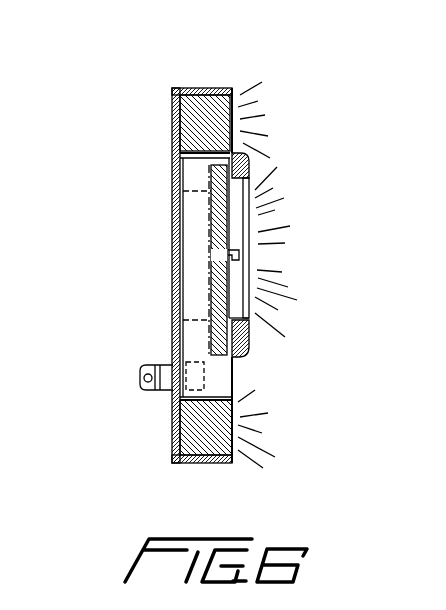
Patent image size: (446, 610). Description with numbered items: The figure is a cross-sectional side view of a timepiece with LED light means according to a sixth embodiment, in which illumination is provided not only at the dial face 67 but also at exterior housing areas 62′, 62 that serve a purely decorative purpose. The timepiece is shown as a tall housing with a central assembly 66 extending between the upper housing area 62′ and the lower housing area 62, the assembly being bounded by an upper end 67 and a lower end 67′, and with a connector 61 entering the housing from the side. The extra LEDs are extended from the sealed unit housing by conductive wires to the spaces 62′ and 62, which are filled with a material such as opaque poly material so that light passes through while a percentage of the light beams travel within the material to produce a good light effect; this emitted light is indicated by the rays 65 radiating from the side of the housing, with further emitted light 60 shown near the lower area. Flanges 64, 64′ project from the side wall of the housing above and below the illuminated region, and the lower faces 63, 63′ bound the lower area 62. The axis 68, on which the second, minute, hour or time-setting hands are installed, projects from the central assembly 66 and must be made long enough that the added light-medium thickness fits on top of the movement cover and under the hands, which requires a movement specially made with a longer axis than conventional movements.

The light source unit 60 is at (236, 405).
The connector cable 61 is at (140, 375).
The exterior housing area 62 is at (190, 430).
The exterior housing area 62′ is at (186, 121).
The lower end face 63 is at (236, 358).
The lower edge 63′ is at (237, 447).
The upper flange 64 is at (247, 152).
The lower flange 64′ is at (247, 347).
The emitted light 65 is at (250, 222).
The lamp tube 66 is at (192, 213).
The dial face 67 is at (196, 178).
The lower end 67′ is at (200, 342).
The axis 68 is at (228, 250).